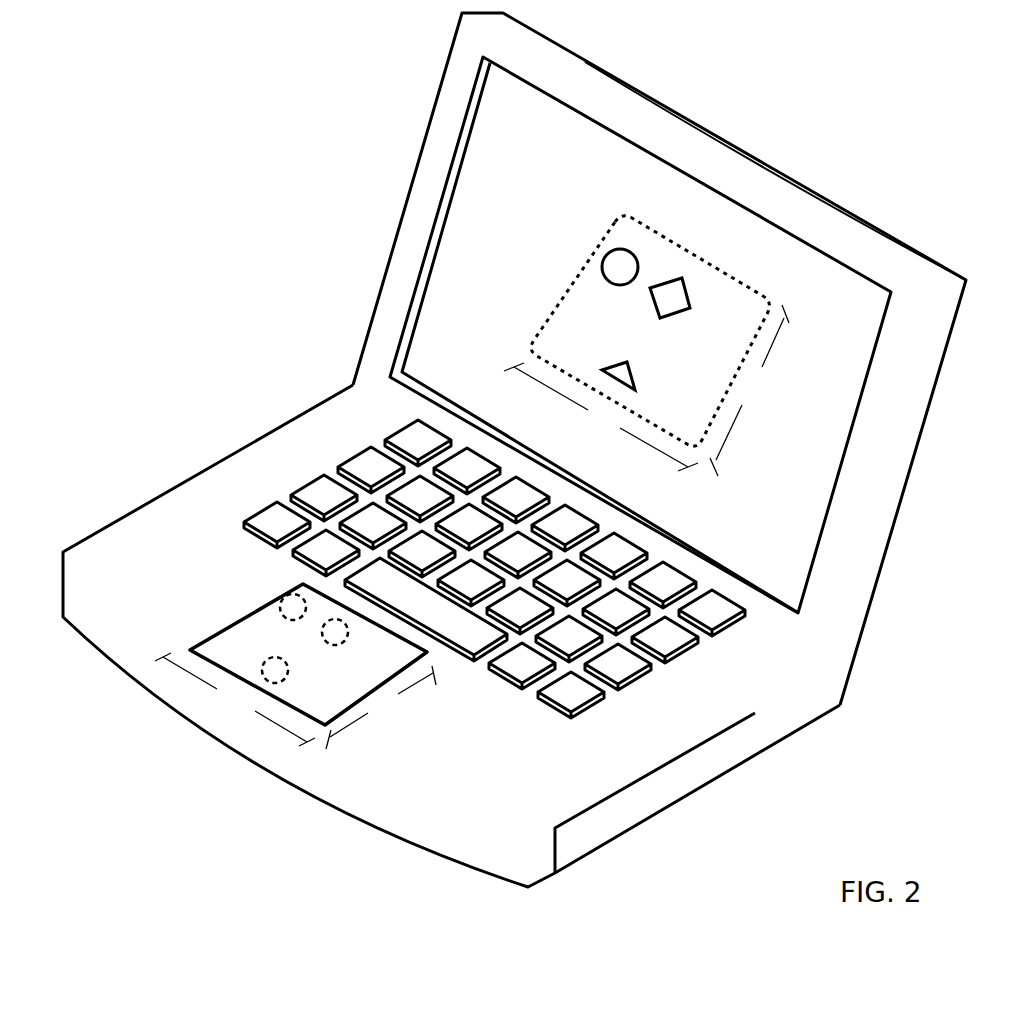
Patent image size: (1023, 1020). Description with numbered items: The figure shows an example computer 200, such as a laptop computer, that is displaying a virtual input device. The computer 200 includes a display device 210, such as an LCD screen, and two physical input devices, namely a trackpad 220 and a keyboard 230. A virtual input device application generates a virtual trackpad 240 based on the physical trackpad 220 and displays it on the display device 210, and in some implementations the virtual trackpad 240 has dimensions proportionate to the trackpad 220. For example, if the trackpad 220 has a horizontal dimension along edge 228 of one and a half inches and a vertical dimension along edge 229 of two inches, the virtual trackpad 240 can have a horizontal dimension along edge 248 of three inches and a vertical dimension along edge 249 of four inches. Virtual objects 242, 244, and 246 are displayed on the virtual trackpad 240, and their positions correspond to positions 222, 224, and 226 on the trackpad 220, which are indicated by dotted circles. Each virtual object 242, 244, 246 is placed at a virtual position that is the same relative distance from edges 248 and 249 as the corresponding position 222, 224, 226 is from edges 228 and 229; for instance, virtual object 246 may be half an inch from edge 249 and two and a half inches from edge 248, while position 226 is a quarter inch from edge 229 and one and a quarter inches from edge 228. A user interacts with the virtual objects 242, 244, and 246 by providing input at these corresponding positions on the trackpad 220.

The computer 200 is at (206, 126).
The display device 210 is at (839, 296).
The trackpad 220 is at (175, 644).
The position 222 is at (293, 607).
The position 224 is at (275, 670).
The position 226 is at (335, 632).
The edge 228 is at (235, 699).
The edge 229 is at (381, 707).
The keyboard 230 is at (408, 408).
The virtual trackpad 240 is at (610, 199).
The virtual object 242 is at (620, 267).
The virtual object 244 is at (630, 372).
The virtual object 246 is at (670, 298).
The edge 248 is at (601, 417).
The edge 249 is at (749, 390).